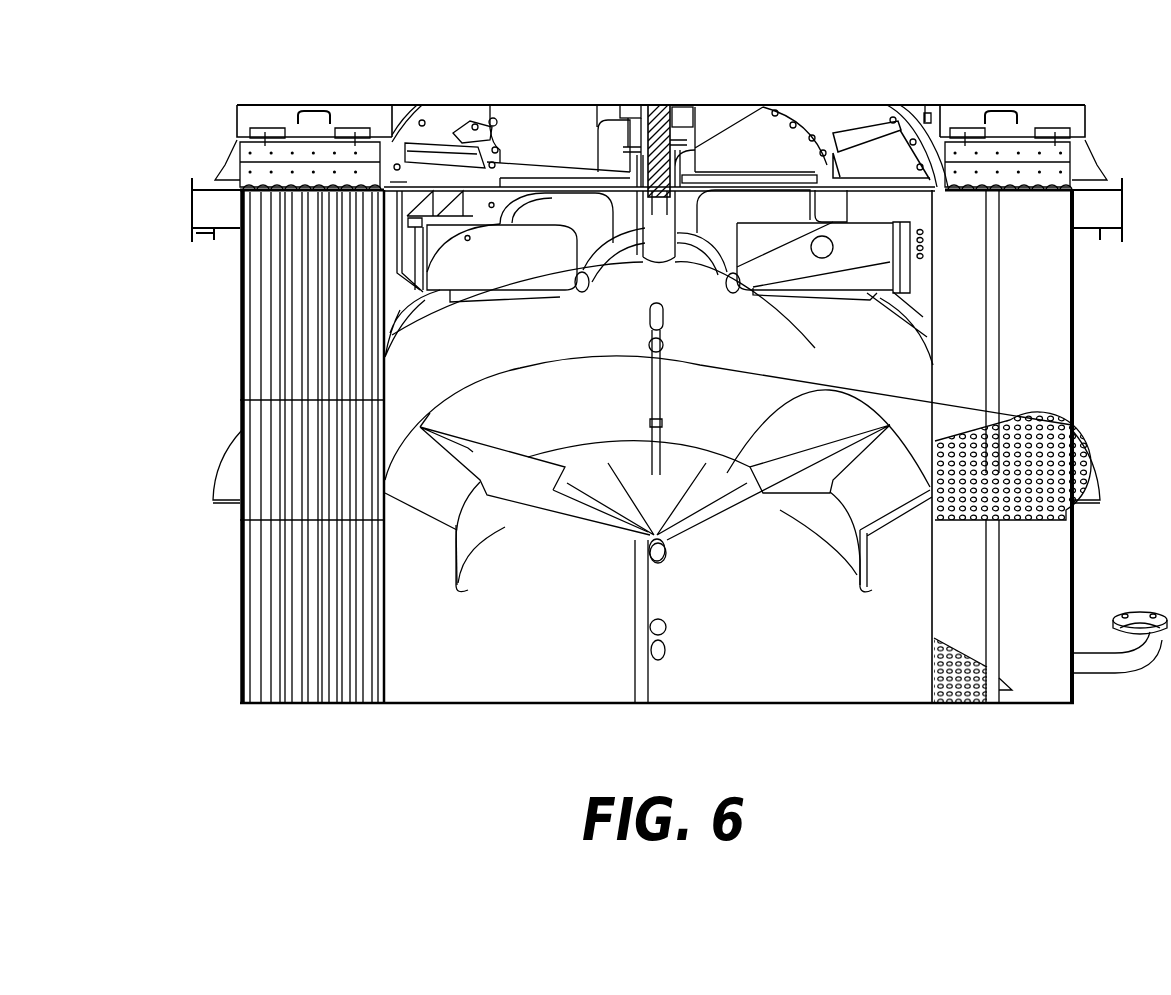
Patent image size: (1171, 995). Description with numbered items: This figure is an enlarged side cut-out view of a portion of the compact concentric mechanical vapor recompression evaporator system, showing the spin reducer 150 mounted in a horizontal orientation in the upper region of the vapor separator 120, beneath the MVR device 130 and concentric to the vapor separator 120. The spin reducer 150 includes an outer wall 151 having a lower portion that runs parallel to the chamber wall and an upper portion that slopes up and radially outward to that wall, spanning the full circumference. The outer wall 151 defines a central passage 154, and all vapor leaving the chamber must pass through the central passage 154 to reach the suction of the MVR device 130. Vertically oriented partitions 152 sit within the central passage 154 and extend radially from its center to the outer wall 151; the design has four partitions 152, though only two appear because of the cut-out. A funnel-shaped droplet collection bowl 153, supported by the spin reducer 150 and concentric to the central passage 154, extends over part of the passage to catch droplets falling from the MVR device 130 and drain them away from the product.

The vapor separator 120 is at (483, 672).
The MVR device 130 is at (386, 229).
The spin reducer 150 is at (439, 492).
The outer wall 151 is at (456, 548).
The partitions 152 is at (420, 410).
The droplet collection bowl 153 is at (1072, 425).
The central passage 154 is at (775, 544).